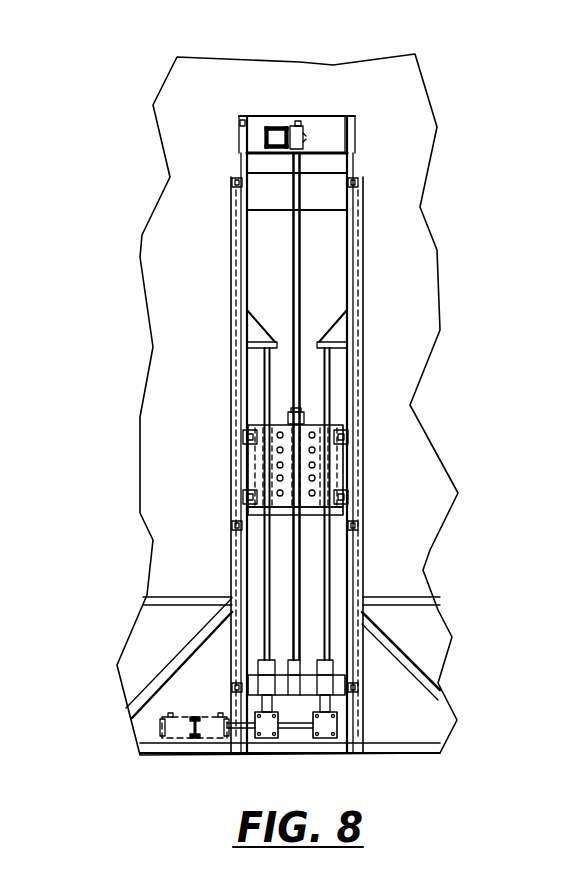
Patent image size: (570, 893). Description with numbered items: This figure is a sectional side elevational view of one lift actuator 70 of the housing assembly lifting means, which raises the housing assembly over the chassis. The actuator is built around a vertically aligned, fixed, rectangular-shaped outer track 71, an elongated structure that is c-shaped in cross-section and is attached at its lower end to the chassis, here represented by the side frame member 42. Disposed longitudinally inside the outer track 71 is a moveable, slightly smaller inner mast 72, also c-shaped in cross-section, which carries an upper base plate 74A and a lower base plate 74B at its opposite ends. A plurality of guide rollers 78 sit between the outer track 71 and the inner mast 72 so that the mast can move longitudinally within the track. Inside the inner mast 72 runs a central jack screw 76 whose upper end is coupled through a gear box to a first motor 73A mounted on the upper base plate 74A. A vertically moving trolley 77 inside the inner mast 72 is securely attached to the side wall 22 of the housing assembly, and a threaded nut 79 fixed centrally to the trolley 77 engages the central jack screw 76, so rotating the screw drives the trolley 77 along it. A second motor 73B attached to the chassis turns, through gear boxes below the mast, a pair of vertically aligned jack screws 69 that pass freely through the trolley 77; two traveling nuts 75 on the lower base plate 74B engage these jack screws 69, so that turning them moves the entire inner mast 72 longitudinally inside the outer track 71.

The side wall 22 is at (206, 477).
The side frame member 42 is at (175, 600).
The jack screw 69 is at (268, 373).
The lift actuator 70 is at (203, 156).
The outer track 71 is at (370, 246).
The inner mast 72 is at (360, 138).
The first motor 73A is at (258, 140).
The second motor 73B is at (162, 728).
The upper base plate 74A is at (313, 122).
The lower base plate 74B is at (338, 702).
The traveling nut 75 is at (265, 668).
The central jack screw 76 is at (293, 303).
The trolley 77 is at (303, 467).
The guide roller 78 is at (232, 183).
The threaded nut 79 is at (305, 413).